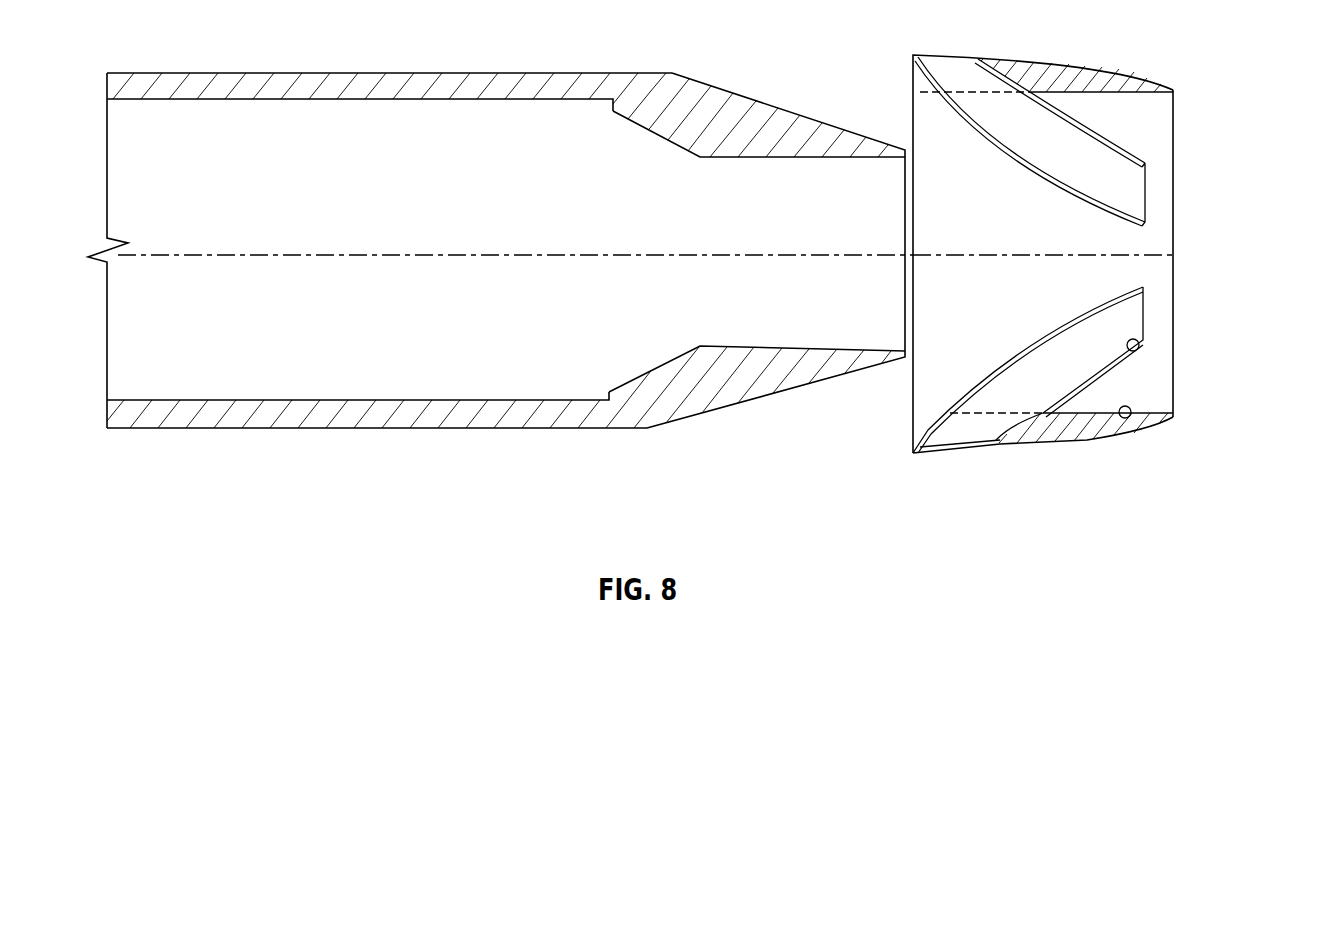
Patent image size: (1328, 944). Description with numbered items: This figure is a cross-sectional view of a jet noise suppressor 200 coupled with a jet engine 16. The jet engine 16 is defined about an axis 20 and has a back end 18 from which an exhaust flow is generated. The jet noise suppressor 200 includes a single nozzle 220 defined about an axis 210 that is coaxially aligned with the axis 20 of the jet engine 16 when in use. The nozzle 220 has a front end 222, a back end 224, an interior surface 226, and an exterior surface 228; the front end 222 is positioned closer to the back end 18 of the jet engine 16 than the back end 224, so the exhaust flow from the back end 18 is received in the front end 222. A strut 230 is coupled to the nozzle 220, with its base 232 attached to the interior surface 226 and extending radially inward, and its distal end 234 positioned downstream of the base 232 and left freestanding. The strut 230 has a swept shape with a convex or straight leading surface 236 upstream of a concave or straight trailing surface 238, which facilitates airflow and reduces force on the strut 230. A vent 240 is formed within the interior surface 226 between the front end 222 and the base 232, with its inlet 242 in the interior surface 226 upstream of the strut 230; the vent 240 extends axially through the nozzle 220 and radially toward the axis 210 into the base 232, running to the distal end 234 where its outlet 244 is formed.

The jet engine 16 is at (660, 73).
The back end 18 is at (782, 110).
The axis 20 is at (592, 258).
The jet noise suppressor 200 is at (1228, 76).
The axis 210 is at (1170, 246).
The nozzle 220 is at (1127, 80).
The front end 222 is at (913, 456).
The back end 224 is at (1175, 408).
The interior surface 226 is at (1125, 418).
The exterior surface 228 is at (1040, 445).
The strut 230 is at (1052, 105).
The base 232 is at (968, 122).
The distal end 234 is at (1146, 165).
The leading surface 236 is at (1040, 175).
The trailing surface 238 is at (1090, 131).
The vent 240 is at (1143, 340).
The inlet 242 is at (935, 446).
The outlet 244 is at (1146, 290).